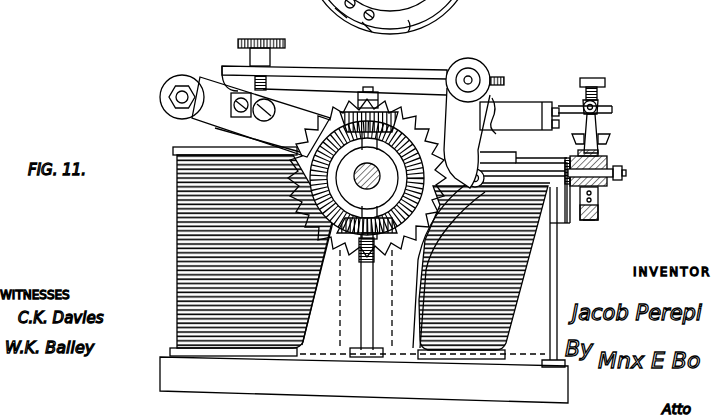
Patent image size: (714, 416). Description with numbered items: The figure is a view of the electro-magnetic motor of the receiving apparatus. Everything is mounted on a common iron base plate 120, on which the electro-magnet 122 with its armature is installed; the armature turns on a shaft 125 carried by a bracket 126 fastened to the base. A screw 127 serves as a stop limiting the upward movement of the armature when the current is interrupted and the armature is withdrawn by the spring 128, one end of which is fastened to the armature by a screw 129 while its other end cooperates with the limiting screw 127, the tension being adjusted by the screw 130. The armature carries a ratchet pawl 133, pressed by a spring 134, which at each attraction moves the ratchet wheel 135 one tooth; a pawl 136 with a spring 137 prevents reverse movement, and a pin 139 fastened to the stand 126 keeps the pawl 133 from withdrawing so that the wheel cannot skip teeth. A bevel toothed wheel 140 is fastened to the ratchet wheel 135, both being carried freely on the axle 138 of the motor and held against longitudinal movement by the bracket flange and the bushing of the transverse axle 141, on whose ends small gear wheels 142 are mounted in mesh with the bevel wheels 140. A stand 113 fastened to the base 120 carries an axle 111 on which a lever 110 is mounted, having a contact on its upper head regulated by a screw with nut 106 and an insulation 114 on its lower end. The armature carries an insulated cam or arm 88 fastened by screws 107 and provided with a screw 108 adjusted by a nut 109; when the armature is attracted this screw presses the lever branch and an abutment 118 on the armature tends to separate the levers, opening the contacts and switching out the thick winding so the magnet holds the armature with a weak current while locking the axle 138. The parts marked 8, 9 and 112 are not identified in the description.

The shaft 8 is at (397, 68).
The dial wheel 9 is at (447, 4).
The cam or arm 88 is at (560, 102).
The nuts 106 is at (598, 110).
The screws 107 is at (541, 150).
The screws 108 is at (603, 80).
The nuts 109 is at (602, 102).
The lever 110 is at (597, 120).
The axle 111 is at (624, 173).
The plunger 112 is at (603, 190).
The stand 113 is at (558, 262).
The insulation 114 is at (592, 221).
The abutment or stop 118 is at (607, 140).
The base plate 120 is at (364, 378).
The electro-magnet 122 is at (178, 238).
The shaft 125 is at (168, 100).
The bracket 126 is at (203, 118).
The screw 127 is at (505, 75).
The spring 128 is at (347, 60).
The screw 129 is at (238, 82).
The screw 130 is at (247, 37).
The ratchet pawl 133 is at (470, 138).
The spring 134 is at (498, 117).
The ratchet wheel 135 is at (381, 247).
The pawl 136 is at (257, 140).
The spring 137 is at (292, 98).
The axle 138 is at (362, 180).
The pin 139 is at (525, 181).
The bevel toothed wheel 140 is at (303, 158).
The transverse axle 141 is at (449, 258).
The small gear wheel 142 is at (383, 112).